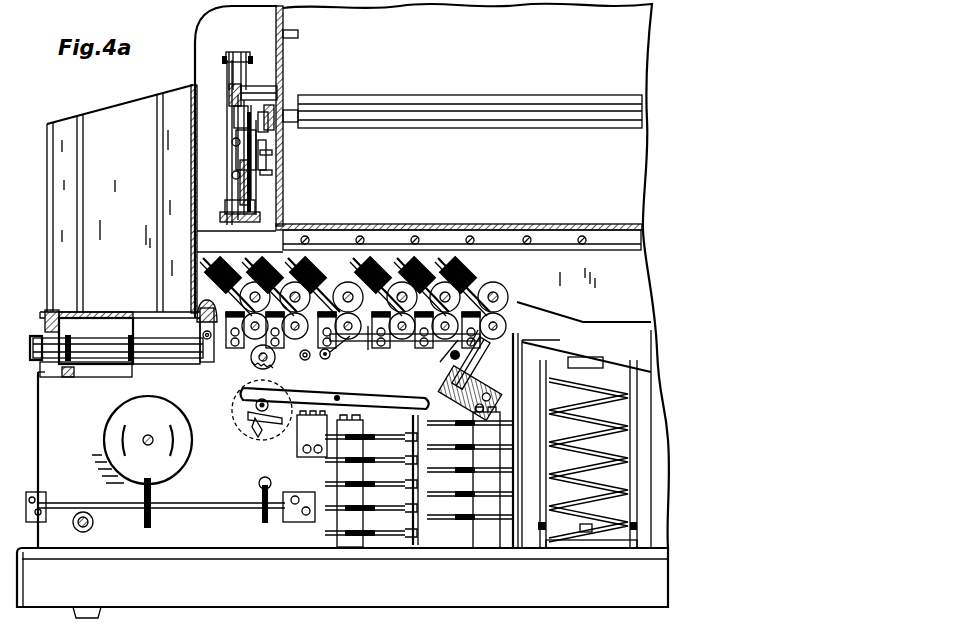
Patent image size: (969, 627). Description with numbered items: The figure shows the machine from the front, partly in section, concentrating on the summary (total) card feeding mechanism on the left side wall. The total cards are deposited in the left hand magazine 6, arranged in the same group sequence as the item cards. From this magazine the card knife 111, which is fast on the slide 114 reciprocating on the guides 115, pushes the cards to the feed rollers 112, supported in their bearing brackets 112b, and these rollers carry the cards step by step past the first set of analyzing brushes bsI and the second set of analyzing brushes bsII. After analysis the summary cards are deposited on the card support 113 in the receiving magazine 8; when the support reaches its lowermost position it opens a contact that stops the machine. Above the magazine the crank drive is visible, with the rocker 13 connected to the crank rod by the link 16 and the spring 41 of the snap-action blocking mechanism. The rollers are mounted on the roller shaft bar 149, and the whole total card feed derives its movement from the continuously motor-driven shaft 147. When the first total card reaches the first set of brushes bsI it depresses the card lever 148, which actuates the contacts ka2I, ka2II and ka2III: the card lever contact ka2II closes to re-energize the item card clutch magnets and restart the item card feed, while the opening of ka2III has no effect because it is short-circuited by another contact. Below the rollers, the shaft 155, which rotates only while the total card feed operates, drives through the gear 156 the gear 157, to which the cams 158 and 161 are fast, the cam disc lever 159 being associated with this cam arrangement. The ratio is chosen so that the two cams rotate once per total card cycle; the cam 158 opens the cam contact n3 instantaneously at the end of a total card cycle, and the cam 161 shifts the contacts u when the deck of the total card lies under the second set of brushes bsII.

The left hand magazine 6 is at (103, 118).
The rocker 13 is at (236, 57).
The spring 41 is at (229, 92).
The link 16 is at (231, 158).
The first set of analyzing brushes bsI is at (258, 252).
The second set of analyzing brushes bsII is at (447, 267).
The roller shaft bar 149 is at (368, 335).
The card lever 148 is at (460, 338).
The feed rollers 112 is at (500, 320).
The bearing bracket 112b is at (228, 347).
The card lever contact ka2I is at (488, 335).
The card lever contact ka2II is at (490, 338).
The card lever contact ka2III is at (478, 350).
The card support 113 is at (598, 374).
The receiving magazine 8 is at (650, 523).
The card knife 111 is at (50, 314).
The slide 114 is at (114, 318).
The guides 115 is at (97, 350).
The shaft 155 is at (255, 362).
The gear 156 is at (270, 364).
The cam disc lever 159 is at (250, 396).
The cam 158 is at (255, 405).
The gear 157 is at (250, 418).
The cam 161 is at (258, 422).
The cam contact n3 is at (257, 418).
The shifting contacts u is at (478, 507).
The shaft 147 is at (259, 484).